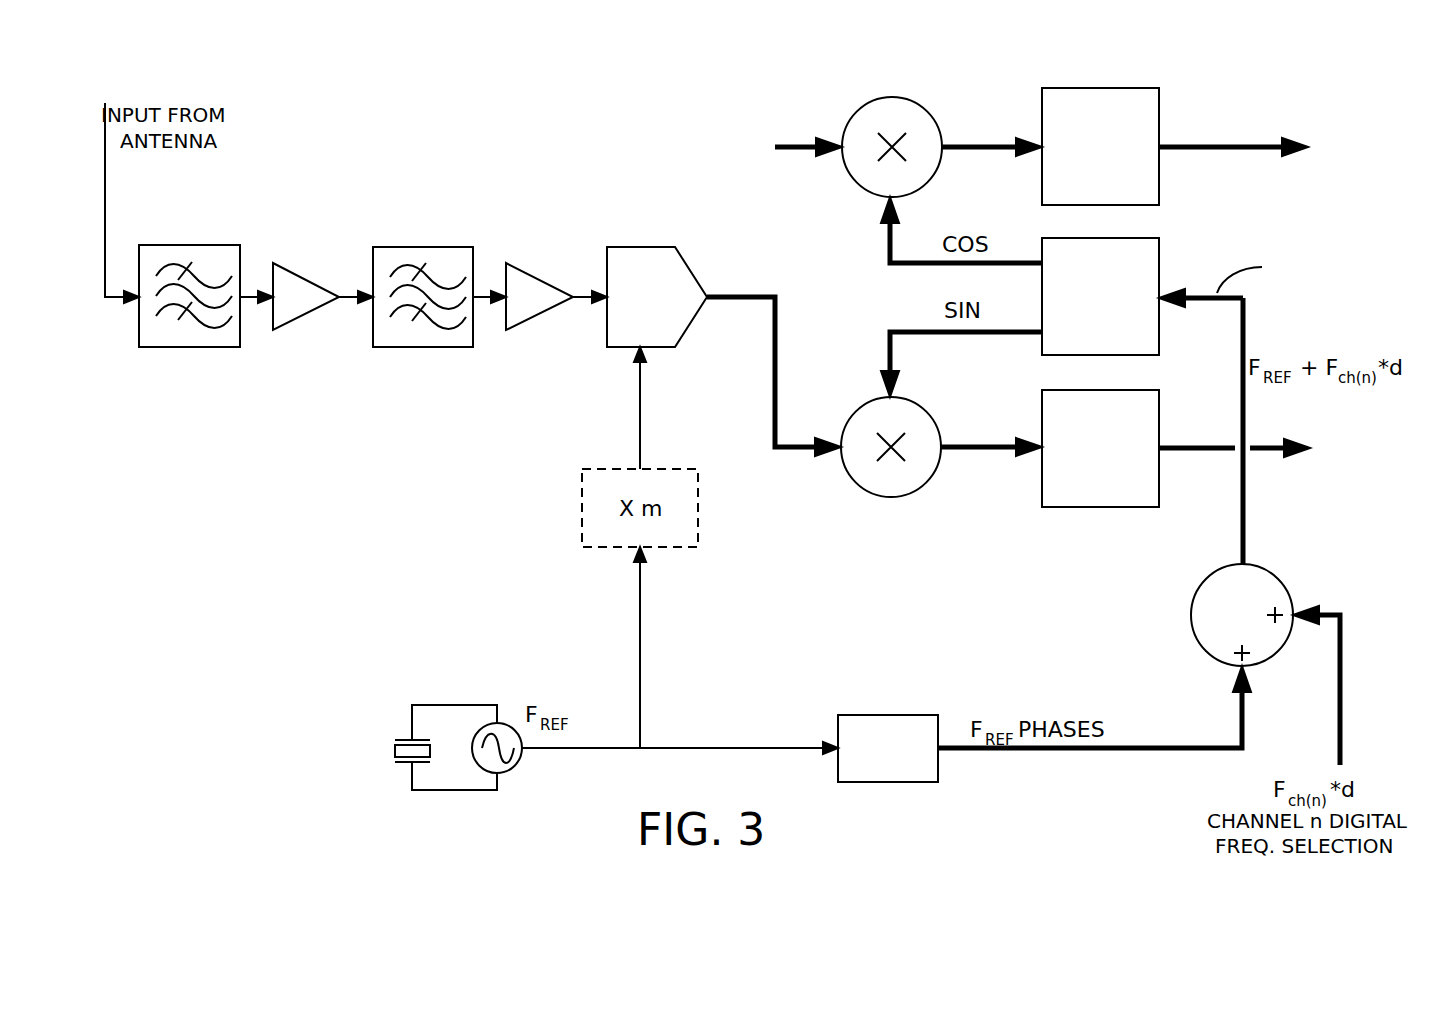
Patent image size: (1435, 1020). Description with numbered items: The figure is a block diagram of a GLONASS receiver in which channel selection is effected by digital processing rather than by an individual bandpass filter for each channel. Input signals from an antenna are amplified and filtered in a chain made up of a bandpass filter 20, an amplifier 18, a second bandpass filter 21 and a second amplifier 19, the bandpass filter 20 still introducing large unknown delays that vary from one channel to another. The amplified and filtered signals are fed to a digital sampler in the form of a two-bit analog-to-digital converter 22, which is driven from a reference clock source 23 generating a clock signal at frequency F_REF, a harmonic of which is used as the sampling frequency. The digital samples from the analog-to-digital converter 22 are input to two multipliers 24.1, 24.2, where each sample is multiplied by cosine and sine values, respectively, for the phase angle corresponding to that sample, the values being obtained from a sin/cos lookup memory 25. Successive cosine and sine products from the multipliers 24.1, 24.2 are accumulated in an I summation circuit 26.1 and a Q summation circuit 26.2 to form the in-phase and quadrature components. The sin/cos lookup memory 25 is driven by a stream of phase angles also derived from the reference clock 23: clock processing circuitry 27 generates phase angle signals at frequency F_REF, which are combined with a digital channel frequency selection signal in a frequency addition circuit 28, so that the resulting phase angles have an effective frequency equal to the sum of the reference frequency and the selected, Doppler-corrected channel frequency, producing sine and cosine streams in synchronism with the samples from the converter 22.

The amplifier 18 is at (283, 263).
The amplifier 19 is at (518, 263).
The bandpass filter 20 is at (175, 245).
The bandpass filter 21 is at (458, 247).
The analog-to-digital converter 22 is at (640, 247).
The reference clock source 23 is at (483, 683).
The multiplier 24.1 is at (890, 97).
The multiplier 24.2 is at (887, 497).
The sin/cos lookup memory 25 is at (1145, 238).
The I summation circuit 26.1 is at (1135, 88).
The Q summation circuit 26.2 is at (1143, 390).
The clock processing circuitry 27 is at (905, 715).
The frequency addition circuit 28 is at (1262, 568).